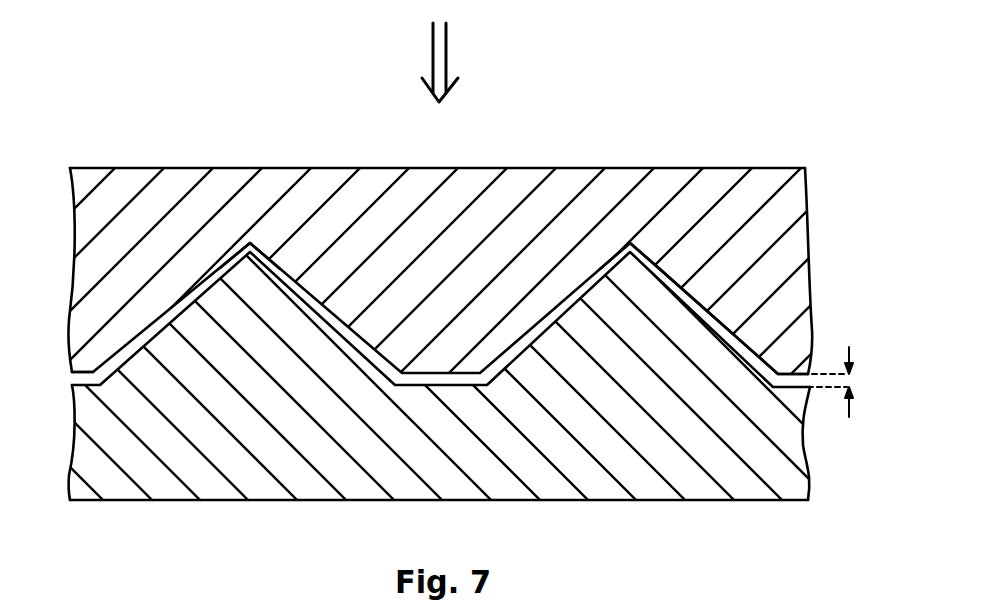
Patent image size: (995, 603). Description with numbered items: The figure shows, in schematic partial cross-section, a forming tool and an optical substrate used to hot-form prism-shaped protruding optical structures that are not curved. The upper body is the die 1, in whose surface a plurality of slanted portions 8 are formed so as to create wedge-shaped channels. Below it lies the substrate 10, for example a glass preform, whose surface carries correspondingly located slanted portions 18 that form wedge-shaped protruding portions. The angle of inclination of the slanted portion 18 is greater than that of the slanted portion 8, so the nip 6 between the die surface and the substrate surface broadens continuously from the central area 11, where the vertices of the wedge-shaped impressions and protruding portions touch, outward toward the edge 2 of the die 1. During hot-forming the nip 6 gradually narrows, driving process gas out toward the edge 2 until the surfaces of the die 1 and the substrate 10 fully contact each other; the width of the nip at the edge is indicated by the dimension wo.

The die 1 is at (795, 195).
The edge 2 is at (83, 373).
The nip 6 is at (125, 353).
The slanted portion 8 is at (668, 267).
The substrate 10 is at (795, 482).
The central area 11 is at (250, 243).
The slanted portion 18 is at (750, 344).
The liner thickness dimension wo is at (852, 382).